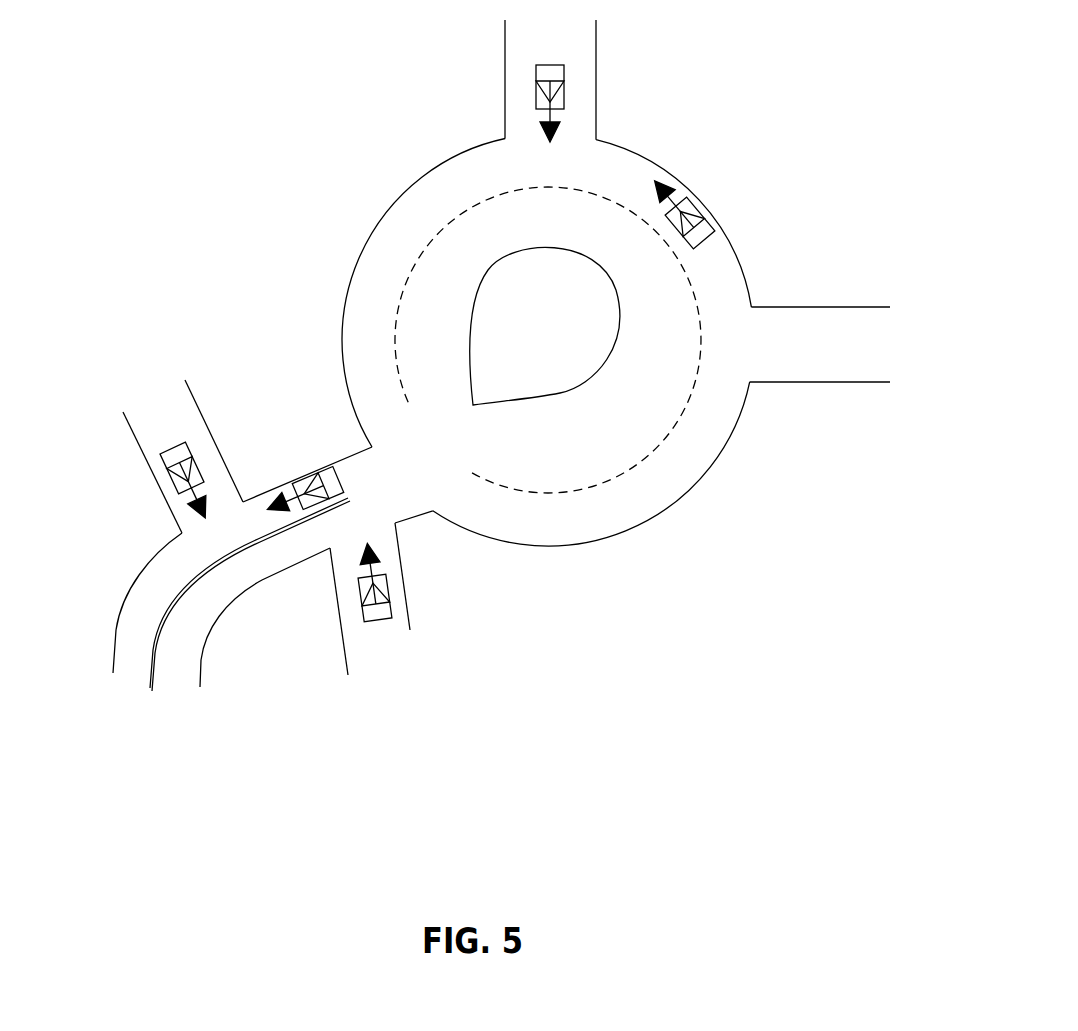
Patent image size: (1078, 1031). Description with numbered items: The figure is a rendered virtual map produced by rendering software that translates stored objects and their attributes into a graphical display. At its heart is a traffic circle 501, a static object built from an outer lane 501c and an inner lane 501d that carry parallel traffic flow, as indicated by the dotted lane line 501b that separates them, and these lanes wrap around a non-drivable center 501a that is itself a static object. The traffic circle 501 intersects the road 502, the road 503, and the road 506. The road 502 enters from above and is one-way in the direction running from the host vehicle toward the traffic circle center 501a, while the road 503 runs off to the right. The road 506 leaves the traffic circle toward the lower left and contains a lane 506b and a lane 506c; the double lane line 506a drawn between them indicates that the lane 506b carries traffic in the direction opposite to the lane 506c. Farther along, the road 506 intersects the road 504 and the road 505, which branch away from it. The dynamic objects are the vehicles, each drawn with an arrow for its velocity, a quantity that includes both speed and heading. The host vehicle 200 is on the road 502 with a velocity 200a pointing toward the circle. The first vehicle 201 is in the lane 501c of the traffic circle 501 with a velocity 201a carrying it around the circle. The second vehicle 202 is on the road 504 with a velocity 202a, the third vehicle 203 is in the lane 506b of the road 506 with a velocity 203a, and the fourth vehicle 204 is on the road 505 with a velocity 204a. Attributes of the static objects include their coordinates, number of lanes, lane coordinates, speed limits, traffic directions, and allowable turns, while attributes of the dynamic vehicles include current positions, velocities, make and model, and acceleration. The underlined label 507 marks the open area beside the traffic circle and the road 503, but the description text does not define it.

The host vehicle 200 is at (550, 72).
The velocity 200a is at (550, 145).
The first vehicle 201 is at (708, 243).
The velocity 201a is at (666, 186).
The second vehicle 202 is at (172, 452).
The velocity 202a is at (204, 512).
The third vehicle 203 is at (328, 475).
The velocity 203a is at (270, 502).
The fourth vehicle 204 is at (377, 620).
The velocity 204a is at (368, 545).
The traffic circle 501 is at (632, 143).
The non-drivable center 501a is at (564, 310).
The lane line 501b is at (413, 271).
The lane 501c is at (466, 207).
The lane 501d is at (514, 252).
The road 502 is at (505, 77).
The road 503 is at (815, 307).
The road 504 is at (203, 413).
The road 505 is at (407, 595).
The road 506 is at (133, 584).
The double lane line 506a is at (150, 690).
The lane 506b is at (171, 579).
The lane 506c is at (209, 611).
The surrounding area 507 is at (826, 124).